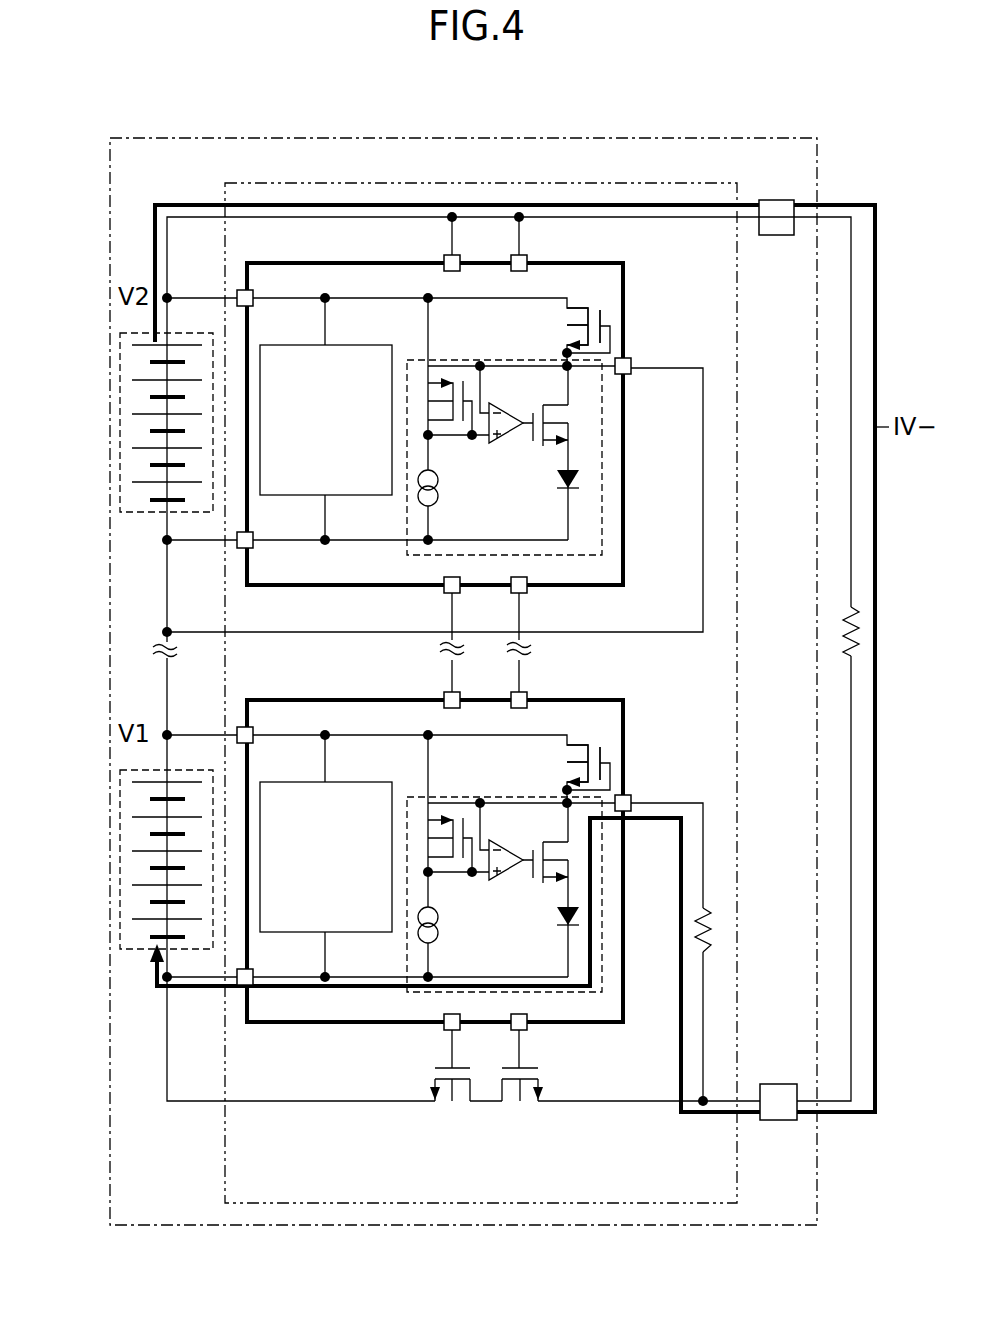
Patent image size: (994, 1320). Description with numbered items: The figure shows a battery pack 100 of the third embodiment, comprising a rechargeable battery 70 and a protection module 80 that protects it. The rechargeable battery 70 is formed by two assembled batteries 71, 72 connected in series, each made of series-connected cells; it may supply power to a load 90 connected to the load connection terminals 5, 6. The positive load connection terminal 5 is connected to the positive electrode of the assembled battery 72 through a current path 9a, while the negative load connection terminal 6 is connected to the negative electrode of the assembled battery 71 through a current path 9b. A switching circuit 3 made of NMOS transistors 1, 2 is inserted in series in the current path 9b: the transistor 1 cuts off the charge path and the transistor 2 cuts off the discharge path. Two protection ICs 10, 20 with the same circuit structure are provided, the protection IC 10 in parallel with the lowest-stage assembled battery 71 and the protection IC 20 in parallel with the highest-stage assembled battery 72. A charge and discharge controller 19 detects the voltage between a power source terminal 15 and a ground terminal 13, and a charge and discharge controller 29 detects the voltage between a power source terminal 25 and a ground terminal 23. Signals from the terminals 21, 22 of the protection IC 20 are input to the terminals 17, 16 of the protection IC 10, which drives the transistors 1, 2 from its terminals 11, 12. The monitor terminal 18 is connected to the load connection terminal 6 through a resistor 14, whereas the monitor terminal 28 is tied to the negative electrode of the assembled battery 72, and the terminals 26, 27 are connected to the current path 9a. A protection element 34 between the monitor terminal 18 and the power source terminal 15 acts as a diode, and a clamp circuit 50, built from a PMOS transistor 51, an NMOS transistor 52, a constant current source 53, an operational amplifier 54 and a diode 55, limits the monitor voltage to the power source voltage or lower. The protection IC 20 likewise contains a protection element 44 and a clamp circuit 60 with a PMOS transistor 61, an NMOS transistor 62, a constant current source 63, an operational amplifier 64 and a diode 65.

The transistor 1 is at (502, 1088).
The transistor 2 is at (470, 1088).
The switching circuit 3 is at (486, 1110).
The load connection terminal 5 is at (776, 235).
The load connection terminal 6 is at (775, 1084).
The current path 9a is at (312, 218).
The current path 9b is at (315, 1100).
The protection IC 10 is at (600, 699).
The COUT terminal 11 is at (530, 1017).
The DOUT terminal 12 is at (444, 1018).
The ground terminal 13 is at (253, 985).
The resistor 14 is at (694, 916).
The power source terminal 15 is at (256, 731).
The SDC terminal 16 is at (444, 707).
The SOC terminal 17 is at (526, 709).
The monitor terminal 18 is at (630, 798).
The charge and discharge controller 19 is at (333, 782).
The protection IC 20 is at (426, 428).
The terminal 21 is at (552, 571).
The terminal 22 is at (425, 571).
The ground terminal 23 is at (275, 550).
The power source terminal 25 is at (275, 287).
The terminal 26 is at (427, 276).
The terminal 27 is at (547, 276).
The monitor terminal 28 is at (653, 354).
The charge and discharge controller 29 is at (327, 405).
The protection element 34 is at (603, 756).
The protection element 44 is at (621, 320).
The clamp circuit 50 is at (504, 863).
The PMOS transistor 51 is at (466, 838).
The NMOS transistor 52 is at (557, 879).
The constant current source 53 is at (440, 933).
The operational amplifier 54 is at (483, 879).
The diode 55 is at (560, 927).
The clamp circuit 60 is at (504, 426).
The PMOS transistor 61 is at (483, 402).
The NMOS transistor 62 is at (528, 438).
The constant current source 63 is at (454, 495).
The operational amplifier 64 is at (461, 457).
The diode 65 is at (546, 494).
The rechargeable battery 70 is at (113, 655).
The assembled battery 71 is at (139, 859).
The assembled battery 72 is at (118, 422).
The protection module 80 is at (665, 182).
The load 90 is at (860, 628).
The battery pack 100 is at (665, 137).